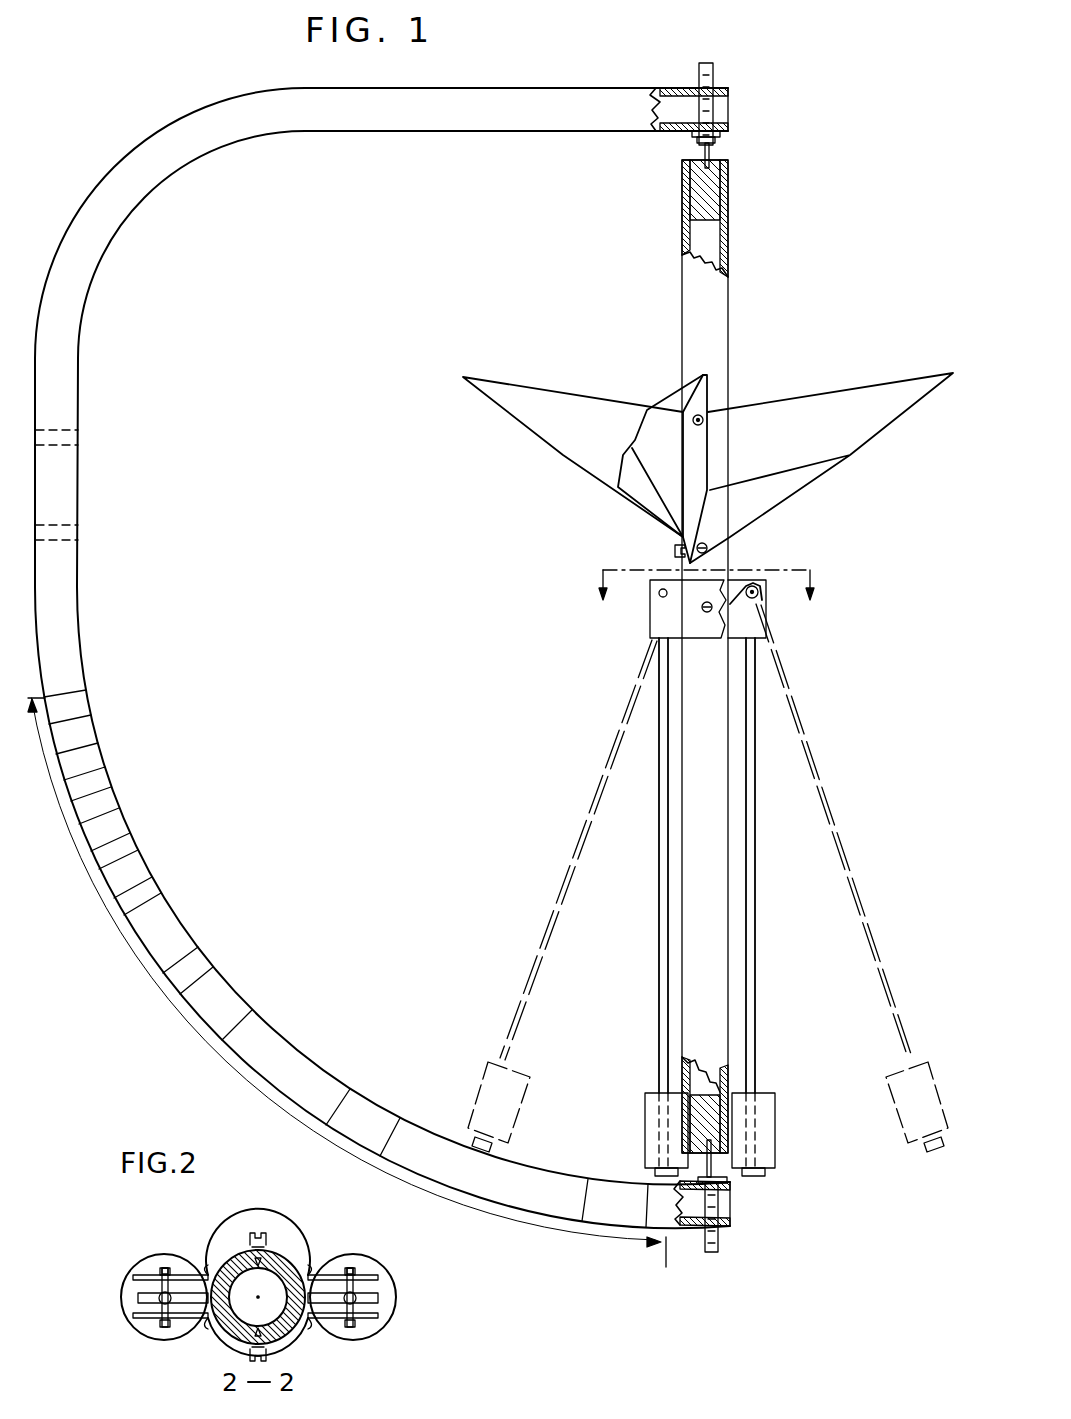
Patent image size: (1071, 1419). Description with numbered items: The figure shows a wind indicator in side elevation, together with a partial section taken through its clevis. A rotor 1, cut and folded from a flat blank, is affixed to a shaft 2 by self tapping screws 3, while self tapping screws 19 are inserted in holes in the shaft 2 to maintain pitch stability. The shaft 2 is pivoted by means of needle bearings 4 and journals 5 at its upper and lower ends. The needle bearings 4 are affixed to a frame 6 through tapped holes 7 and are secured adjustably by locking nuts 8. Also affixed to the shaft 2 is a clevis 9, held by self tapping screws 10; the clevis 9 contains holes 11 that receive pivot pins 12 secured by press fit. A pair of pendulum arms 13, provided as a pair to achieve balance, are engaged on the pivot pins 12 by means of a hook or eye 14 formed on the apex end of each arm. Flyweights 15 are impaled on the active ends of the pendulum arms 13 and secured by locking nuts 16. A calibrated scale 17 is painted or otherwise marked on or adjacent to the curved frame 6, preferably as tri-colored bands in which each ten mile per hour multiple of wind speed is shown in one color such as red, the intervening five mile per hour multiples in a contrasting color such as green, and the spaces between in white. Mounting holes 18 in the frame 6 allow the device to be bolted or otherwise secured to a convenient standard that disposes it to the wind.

In FIG. 1, the rotor 1 is at (860, 408).
In FIG. 1, the shaft 2 is at (708, 330).
In FIG. 2, the shaft 2 is at (222, 1263).
In FIG. 1, the self tapping screws 3 is at (675, 551).
In FIG. 1, the needle bearings 4 is at (712, 153).
In FIG. 1, the journals 5 is at (710, 195).
In FIG. 1, the frame 6 is at (602, 108).
In FIG. 1, the tapped holes 7 is at (715, 85).
In FIG. 1, the locking nuts 8 is at (722, 134).
In FIG. 1, the clevis 9 is at (667, 627).
In FIG. 2, the clevis 9 is at (282, 1250).
In FIG. 1, the self tapping screws 10 is at (701, 607).
In FIG. 2, the self tapping screws 10 is at (250, 1235).
In FIG. 1, the holes 11 is at (659, 593).
In FIG. 1, the pivot pins 12 is at (759, 593).
In FIG. 2, the pivot pins 12 is at (163, 1268).
In FIG. 1, the pendulum arms 13 is at (658, 875).
In FIG. 2, the pendulum arms 13 is at (160, 1297).
In FIG. 1, the hook or eye 14 is at (763, 587).
In FIG. 2, the hook or eye 14 is at (138, 1298).
In FIG. 1, the flyweights 15 is at (655, 1130).
In FIG. 2, the flyweights 15 is at (165, 1337).
In FIG. 1, the locking nuts 16 is at (655, 1172).
In FIG. 1, the calibrated scale 17 is at (232, 1070).
In FIG. 1, the mounting holes 18 is at (57, 438).
In FIG. 1, the self tapping screws 19 is at (700, 418).